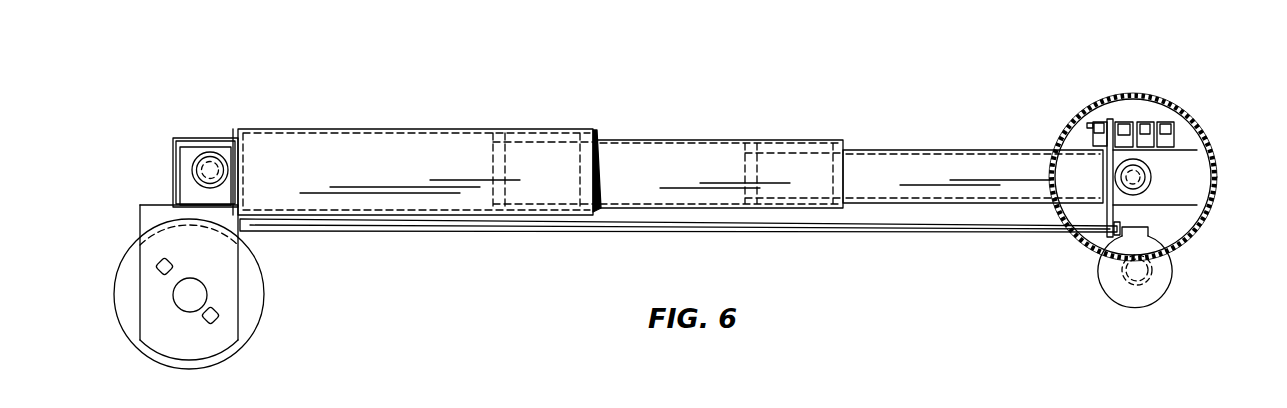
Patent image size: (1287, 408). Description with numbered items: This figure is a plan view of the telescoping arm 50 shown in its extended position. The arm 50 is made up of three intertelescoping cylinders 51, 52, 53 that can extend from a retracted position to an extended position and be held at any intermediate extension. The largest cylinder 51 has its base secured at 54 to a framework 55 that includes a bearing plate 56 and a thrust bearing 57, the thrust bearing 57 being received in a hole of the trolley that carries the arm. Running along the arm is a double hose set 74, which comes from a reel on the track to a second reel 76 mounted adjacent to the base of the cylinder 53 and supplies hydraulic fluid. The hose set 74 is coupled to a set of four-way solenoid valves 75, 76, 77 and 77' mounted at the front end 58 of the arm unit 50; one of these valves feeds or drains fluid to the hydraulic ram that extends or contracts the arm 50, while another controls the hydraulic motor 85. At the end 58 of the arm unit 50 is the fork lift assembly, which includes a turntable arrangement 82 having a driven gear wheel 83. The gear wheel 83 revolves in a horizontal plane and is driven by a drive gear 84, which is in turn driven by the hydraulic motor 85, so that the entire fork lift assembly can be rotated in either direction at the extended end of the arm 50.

The telescoping arm 50 is at (589, 120).
The largest cylinder 51 is at (413, 140).
The intermediate cylinder 52 is at (665, 148).
The smallest cylinder 53 is at (912, 158).
The base securement 54 is at (236, 138).
The framework 55 is at (188, 147).
The bearing plate 56 is at (177, 138).
The thrust bearing 57 is at (205, 172).
The front end of arm unit 58 is at (1200, 175).
The double hose set 74 is at (948, 233).
The solenoid valve 75 is at (1176, 122).
The second reel and solenoid valve 76 is at (265, 283).
The solenoid valve 77 is at (1129, 148).
The solenoid valve 77' is at (1083, 103).
The turntable arrangement 82 is at (1190, 232).
The driven gear wheel 83 is at (1213, 195).
The drive gear 84 is at (1150, 272).
The hydraulic motor 85 is at (1167, 298).